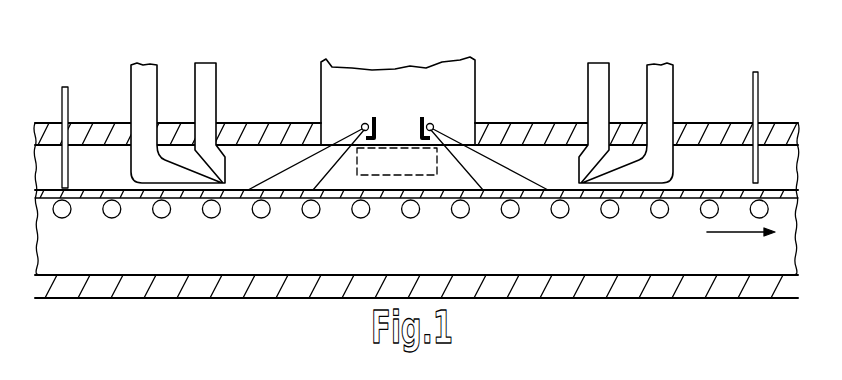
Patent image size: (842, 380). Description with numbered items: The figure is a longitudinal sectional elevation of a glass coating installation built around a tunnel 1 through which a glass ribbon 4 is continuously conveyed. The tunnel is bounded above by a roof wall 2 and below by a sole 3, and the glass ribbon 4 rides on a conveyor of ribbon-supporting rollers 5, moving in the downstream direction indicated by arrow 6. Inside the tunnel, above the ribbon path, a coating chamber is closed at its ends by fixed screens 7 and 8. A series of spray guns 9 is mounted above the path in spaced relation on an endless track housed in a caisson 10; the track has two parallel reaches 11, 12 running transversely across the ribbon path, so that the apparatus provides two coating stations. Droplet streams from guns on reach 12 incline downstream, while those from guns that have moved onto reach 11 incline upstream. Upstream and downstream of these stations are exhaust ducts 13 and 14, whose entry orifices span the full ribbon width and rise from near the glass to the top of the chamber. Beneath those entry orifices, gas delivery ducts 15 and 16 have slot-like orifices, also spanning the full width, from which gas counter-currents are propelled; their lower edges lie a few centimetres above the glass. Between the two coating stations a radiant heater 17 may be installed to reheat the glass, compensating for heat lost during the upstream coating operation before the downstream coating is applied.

The tunnel 1 is at (496, 258).
The roof wall 2 is at (520, 128).
The sole 3 is at (568, 284).
The glass ribbon 4 is at (633, 199).
The ribbon-supporting rollers 5 is at (306, 216).
The arrow 6 is at (737, 236).
The fixed screen 7 is at (65, 86).
The fixed screen 8 is at (758, 95).
The spray guns 9 is at (433, 124).
The caisson 10 is at (398, 100).
The track reach 11 is at (372, 116).
The track reach 12 is at (423, 116).
The exhaust duct 13 is at (217, 97).
The exhaust duct 14 is at (590, 88).
The gas delivery duct 15 is at (131, 92).
The gas delivery duct 16 is at (675, 95).
The radiant heater 17 is at (390, 178).